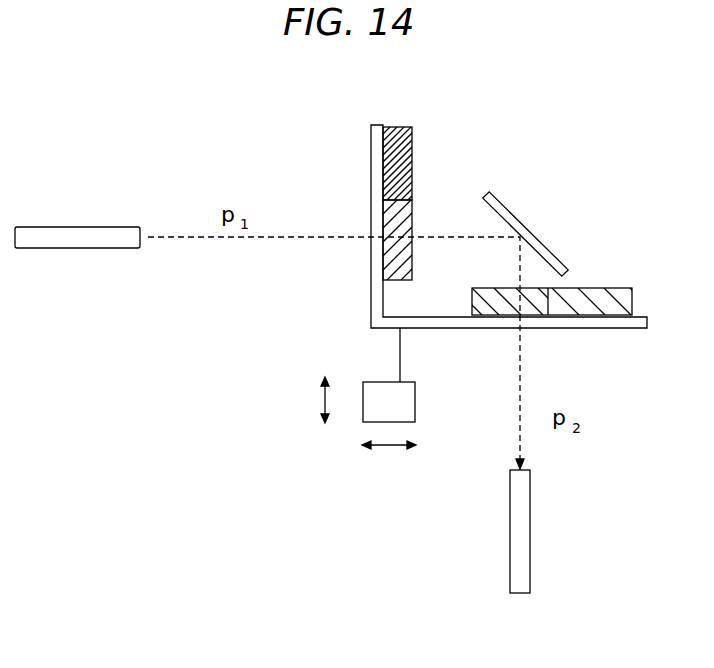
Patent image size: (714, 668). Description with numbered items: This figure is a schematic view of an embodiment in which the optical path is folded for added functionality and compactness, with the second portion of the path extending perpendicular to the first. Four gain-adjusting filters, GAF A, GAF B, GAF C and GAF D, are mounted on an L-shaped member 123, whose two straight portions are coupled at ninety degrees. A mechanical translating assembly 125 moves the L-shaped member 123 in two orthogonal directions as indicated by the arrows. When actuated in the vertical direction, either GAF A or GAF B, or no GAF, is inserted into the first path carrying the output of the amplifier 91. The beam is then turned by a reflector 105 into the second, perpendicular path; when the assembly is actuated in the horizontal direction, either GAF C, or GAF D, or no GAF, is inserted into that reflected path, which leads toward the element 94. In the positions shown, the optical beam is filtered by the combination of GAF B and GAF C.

The amplifier 91 is at (79, 226).
The reflector 105 is at (512, 211).
The L-shaped member 123 is at (371, 293).
The mechanical translating assembly 125 is at (378, 382).
The detector 94 is at (510, 522).